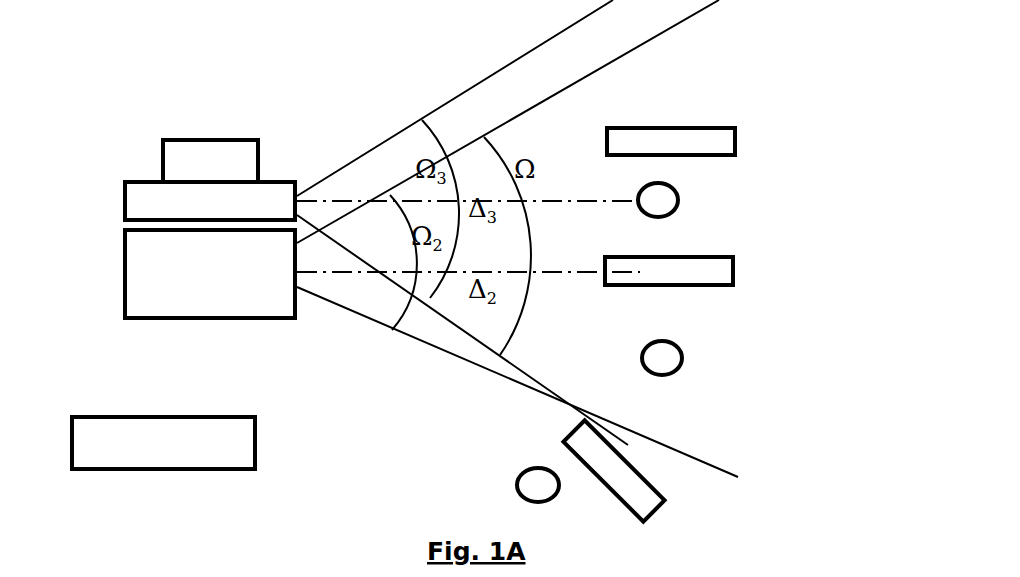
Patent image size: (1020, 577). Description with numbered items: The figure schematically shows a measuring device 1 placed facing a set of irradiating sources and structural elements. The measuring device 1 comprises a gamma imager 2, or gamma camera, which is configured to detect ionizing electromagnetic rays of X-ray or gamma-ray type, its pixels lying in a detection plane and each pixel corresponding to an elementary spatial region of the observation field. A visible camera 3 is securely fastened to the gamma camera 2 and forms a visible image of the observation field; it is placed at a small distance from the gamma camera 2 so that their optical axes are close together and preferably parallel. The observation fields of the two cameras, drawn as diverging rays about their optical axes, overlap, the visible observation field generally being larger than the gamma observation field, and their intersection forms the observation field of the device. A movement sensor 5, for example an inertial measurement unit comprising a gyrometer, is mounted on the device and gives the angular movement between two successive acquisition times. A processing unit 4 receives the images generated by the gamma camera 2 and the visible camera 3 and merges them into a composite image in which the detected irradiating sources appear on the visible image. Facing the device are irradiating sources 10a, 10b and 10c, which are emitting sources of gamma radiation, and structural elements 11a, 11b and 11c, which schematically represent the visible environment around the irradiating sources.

The measuring device 1 is at (163, 214).
The gamma imager 2 is at (147, 293).
The visible camera 3 is at (143, 198).
The processing unit 4 is at (105, 432).
The movement sensor 5 is at (183, 150).
The irradiating source 10a is at (638, 206).
The irradiating source 10b is at (642, 363).
The irradiating source 10c is at (518, 496).
The structural element 11a is at (607, 140).
The structural element 11b is at (604, 270).
The structural element 11c is at (563, 441).